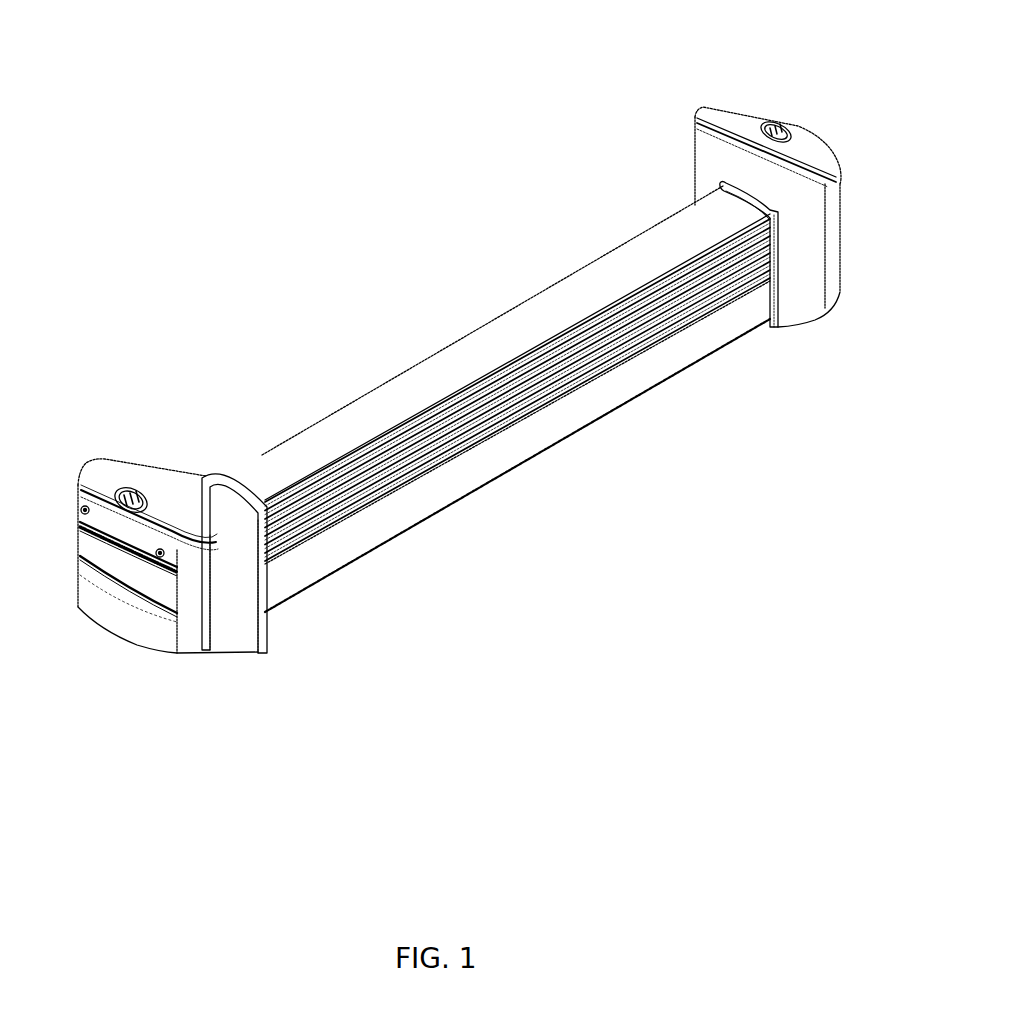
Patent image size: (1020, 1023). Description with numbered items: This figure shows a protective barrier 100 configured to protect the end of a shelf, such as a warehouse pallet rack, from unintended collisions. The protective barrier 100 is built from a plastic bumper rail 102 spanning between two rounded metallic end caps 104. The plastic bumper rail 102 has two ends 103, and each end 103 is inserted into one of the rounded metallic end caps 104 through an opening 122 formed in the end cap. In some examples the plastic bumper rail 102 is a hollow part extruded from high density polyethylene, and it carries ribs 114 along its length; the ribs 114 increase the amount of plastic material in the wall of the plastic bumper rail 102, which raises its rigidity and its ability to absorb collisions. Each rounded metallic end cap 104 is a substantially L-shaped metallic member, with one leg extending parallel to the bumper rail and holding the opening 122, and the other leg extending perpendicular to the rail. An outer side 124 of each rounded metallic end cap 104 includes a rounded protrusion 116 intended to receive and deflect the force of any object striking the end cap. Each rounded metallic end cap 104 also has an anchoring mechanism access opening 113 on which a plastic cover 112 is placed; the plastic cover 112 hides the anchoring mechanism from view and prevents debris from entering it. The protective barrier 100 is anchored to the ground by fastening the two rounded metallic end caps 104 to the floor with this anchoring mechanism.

The protective barrier 100 is at (580, 532).
The plastic bumper rail 102 is at (510, 317).
The end of the plastic bumper rail 103 is at (118, 447).
The rounded metallic end cap 104 is at (140, 630).
The plastic cover 112 is at (167, 515).
The anchoring mechanism access opening 113 is at (142, 475).
The ribs 114 is at (617, 360).
The rounded protrusion 116 is at (128, 578).
The opening 122 is at (240, 487).
The outer side of the rounded metallic end cap 124 is at (103, 590).